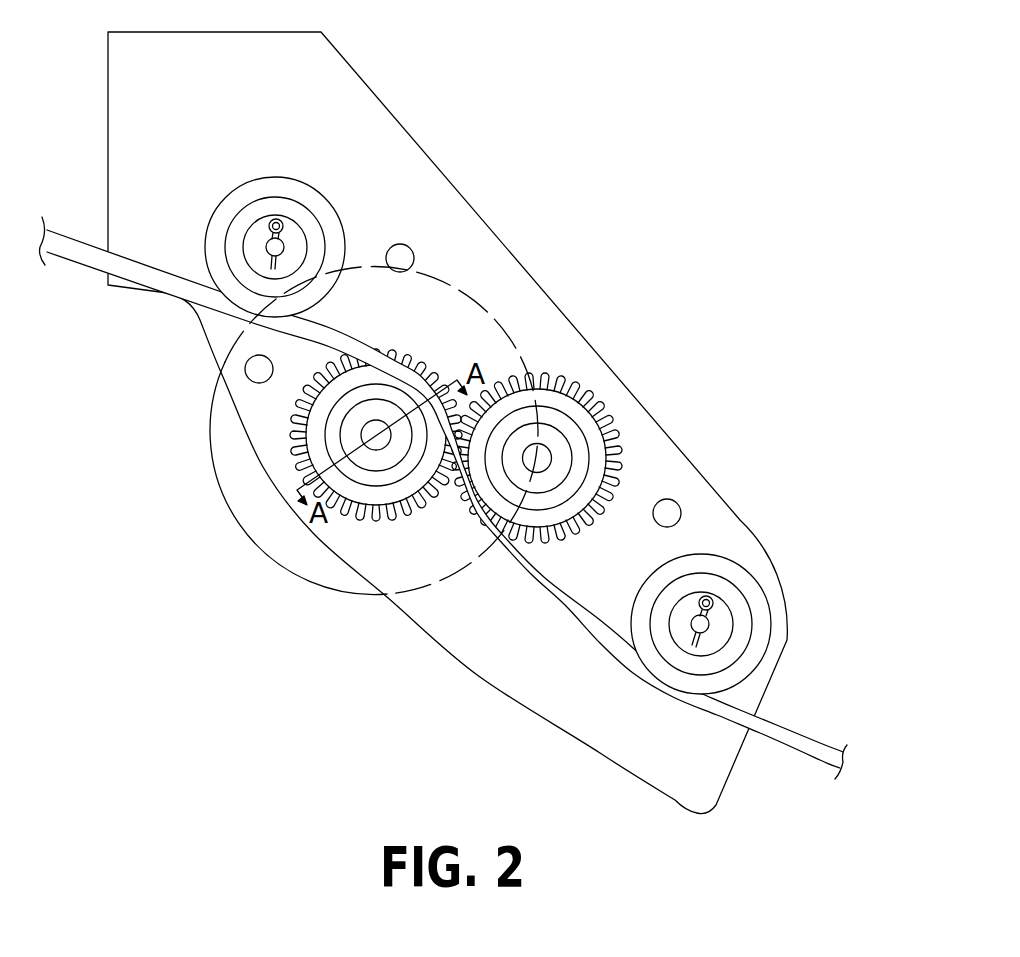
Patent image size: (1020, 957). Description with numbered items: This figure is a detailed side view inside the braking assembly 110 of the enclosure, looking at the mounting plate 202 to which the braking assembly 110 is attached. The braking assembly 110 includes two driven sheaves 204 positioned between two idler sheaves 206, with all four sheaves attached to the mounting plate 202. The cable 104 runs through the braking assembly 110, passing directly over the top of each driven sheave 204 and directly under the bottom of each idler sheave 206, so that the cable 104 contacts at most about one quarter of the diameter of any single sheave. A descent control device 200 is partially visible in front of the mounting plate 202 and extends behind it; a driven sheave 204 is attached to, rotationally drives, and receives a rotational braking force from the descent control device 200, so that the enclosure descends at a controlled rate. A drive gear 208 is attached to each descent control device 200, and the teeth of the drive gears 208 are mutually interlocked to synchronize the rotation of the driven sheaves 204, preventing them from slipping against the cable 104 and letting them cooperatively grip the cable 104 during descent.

The cable 104 is at (803, 742).
The braking assembly 110 is at (620, 279).
The descent control device 200 is at (310, 587).
The mounting plate 202 is at (280, 63).
The driven sheave 204 is at (393, 380).
The idler sheave 206 is at (297, 190).
The drive gear 208 is at (402, 513).